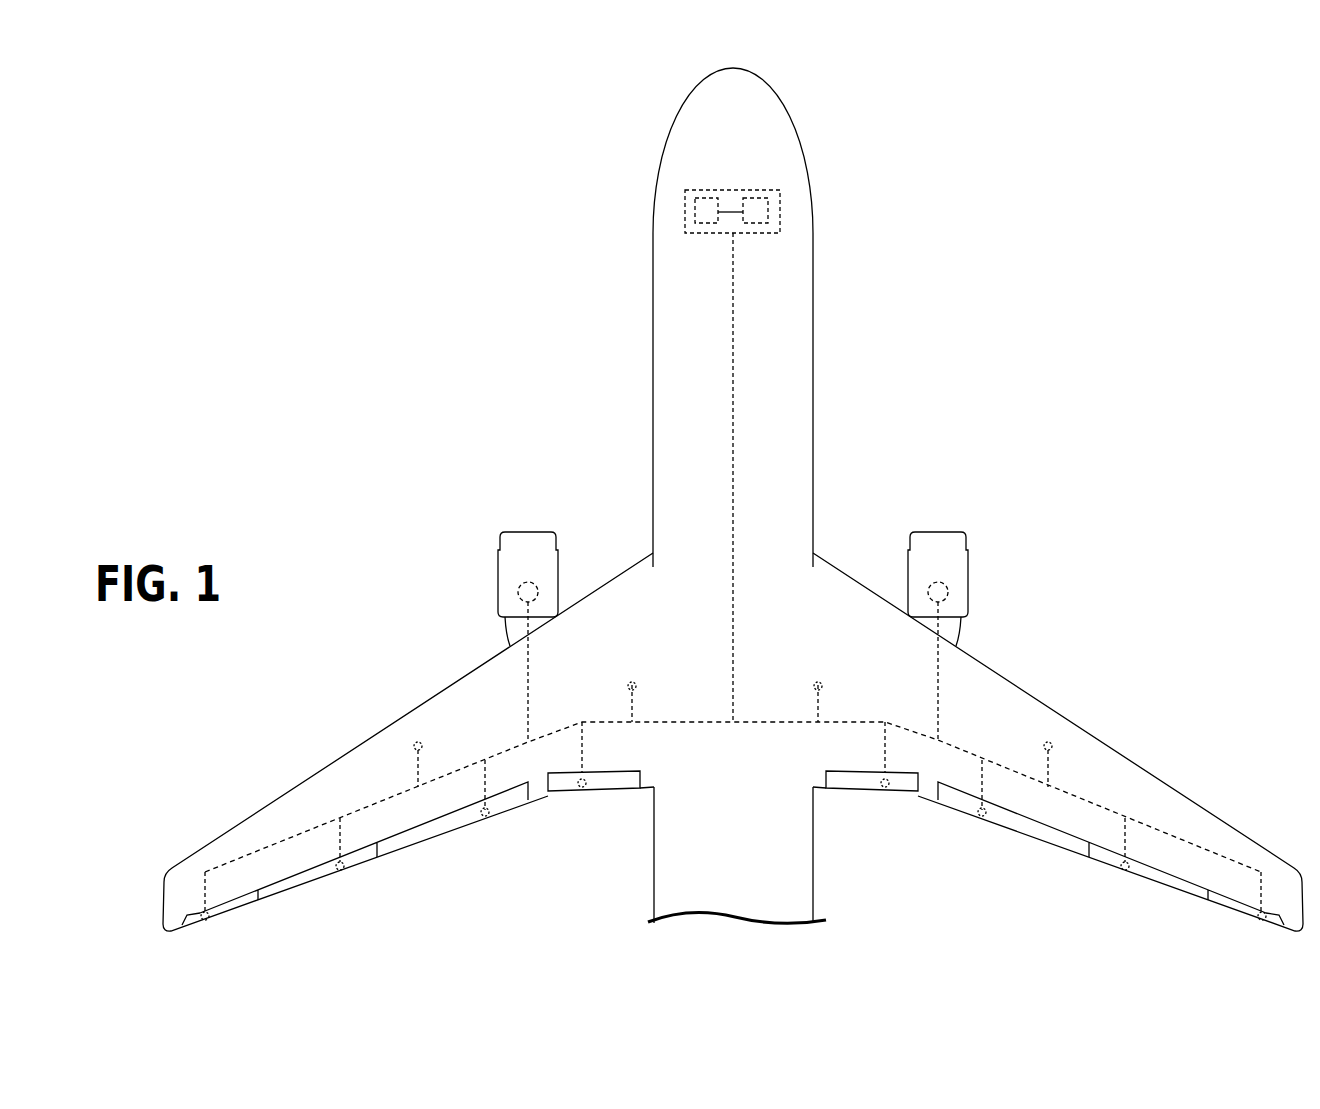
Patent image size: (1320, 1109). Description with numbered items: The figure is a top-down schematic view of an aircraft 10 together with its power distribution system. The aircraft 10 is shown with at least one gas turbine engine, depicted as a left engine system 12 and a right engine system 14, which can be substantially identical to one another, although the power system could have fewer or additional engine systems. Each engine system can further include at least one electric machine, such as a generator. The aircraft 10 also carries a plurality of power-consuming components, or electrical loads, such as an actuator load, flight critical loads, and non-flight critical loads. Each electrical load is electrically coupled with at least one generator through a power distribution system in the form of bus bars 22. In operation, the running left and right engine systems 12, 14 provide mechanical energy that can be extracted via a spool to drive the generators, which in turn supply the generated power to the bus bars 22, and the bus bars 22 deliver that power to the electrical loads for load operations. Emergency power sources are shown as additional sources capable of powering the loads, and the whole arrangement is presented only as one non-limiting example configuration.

The aircraft 10 is at (542, 100).
The left engine system 12 is at (527, 542).
The right engine system 14 is at (953, 547).
The bus bars 22 is at (732, 417).